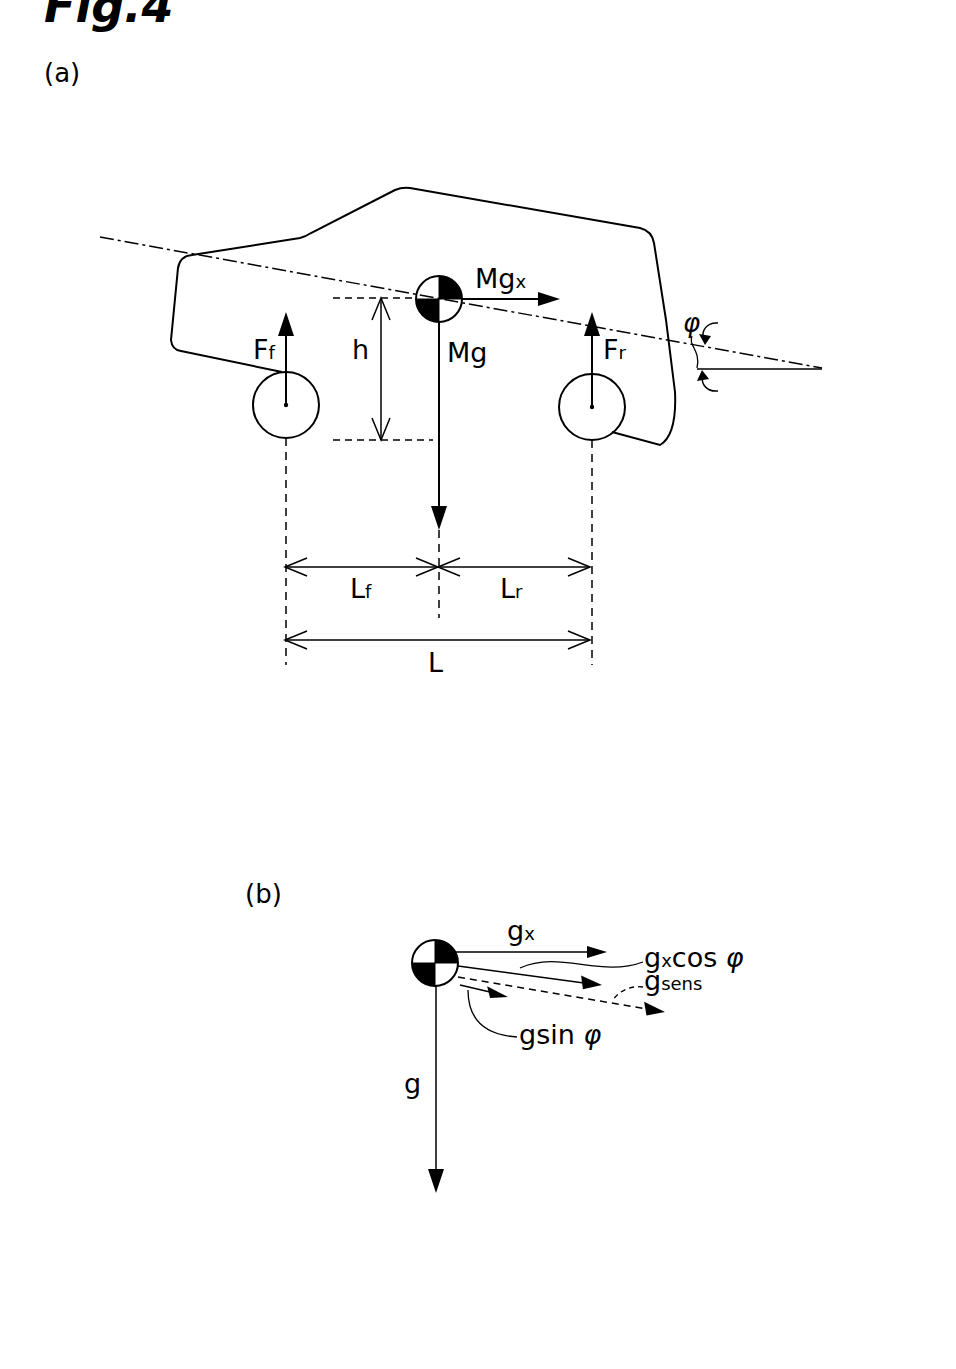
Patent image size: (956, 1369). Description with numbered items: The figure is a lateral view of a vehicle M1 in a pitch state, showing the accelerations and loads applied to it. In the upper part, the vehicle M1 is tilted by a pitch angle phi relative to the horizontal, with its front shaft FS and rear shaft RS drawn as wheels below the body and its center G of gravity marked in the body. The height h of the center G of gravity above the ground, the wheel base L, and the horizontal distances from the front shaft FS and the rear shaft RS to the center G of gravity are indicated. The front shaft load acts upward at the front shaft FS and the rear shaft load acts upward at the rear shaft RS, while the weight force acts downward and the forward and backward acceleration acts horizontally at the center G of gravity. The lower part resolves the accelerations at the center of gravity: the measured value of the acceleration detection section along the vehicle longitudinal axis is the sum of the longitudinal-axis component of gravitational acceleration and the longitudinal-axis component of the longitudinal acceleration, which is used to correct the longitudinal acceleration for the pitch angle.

The center of gravity G is at (437, 277).
The vehicle M1 is at (610, 220).
The front shaft FS is at (286, 405).
The rear shaft RS is at (592, 407).